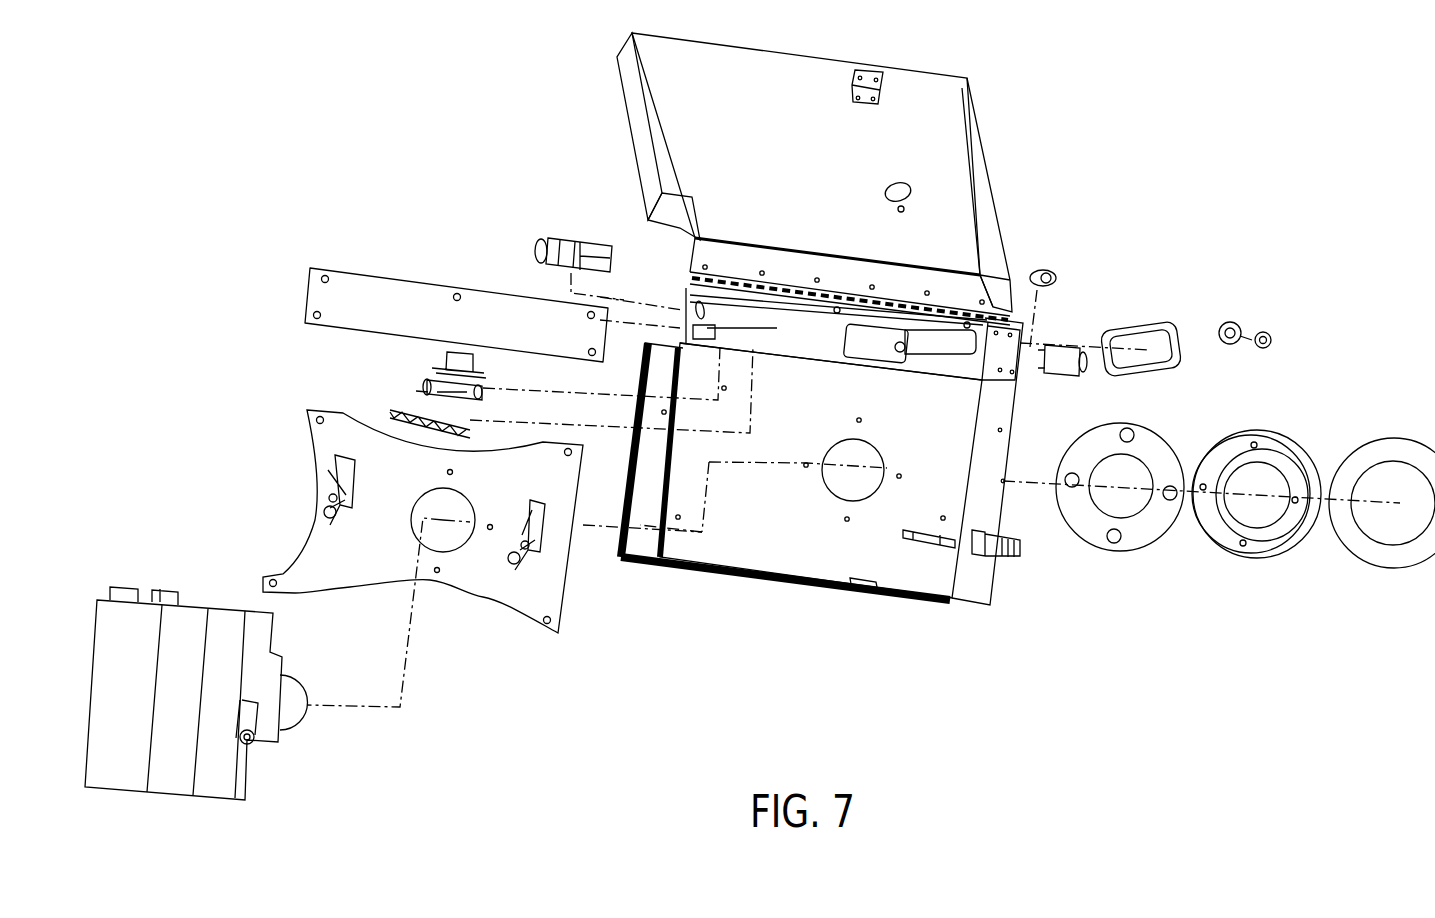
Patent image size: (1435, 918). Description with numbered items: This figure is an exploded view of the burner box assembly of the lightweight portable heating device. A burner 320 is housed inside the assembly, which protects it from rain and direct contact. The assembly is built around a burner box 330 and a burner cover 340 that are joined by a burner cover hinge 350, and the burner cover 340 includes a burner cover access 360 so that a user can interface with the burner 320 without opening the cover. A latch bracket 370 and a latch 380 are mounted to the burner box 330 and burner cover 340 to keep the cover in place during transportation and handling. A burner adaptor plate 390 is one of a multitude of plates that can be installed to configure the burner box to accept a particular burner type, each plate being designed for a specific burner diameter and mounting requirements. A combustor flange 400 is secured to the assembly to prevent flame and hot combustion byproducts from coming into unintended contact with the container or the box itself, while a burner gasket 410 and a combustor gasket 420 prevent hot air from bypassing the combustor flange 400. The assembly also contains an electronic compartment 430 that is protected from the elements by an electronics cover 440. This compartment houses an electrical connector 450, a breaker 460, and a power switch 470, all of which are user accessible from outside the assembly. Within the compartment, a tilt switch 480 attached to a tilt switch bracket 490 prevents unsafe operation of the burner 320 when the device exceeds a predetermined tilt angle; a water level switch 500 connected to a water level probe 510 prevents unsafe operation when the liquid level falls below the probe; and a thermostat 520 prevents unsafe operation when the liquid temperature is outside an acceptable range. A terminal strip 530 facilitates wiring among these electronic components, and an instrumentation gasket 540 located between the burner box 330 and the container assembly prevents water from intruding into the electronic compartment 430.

The burner 320 is at (287, 705).
The burner box 330 is at (978, 590).
The burner cover 340 is at (975, 167).
The burner cover hinge 350 is at (692, 274).
The burner cover access 360 is at (897, 192).
The latch bracket 370 is at (878, 70).
The latch 380 is at (868, 590).
The burner adaptor plate 390 is at (476, 585).
The combustor flange 400 is at (1270, 558).
The burner gasket 410 is at (1130, 552).
The combustor gasket 420 is at (1372, 566).
The electronic compartment 430 is at (810, 435).
The electronics cover 440 is at (517, 305).
The electrical connector 450 is at (1043, 276).
The breaker 460 is at (1068, 346).
The power switch 470 is at (566, 236).
The tilt switch 480 is at (447, 358).
The tilt switch bracket 490 is at (428, 386).
The water level switch 500 is at (860, 345).
The water level probe 510 is at (1268, 333).
The thermostat 520 is at (1232, 330).
The terminal strip 530 is at (396, 413).
The instrumentation gasket 540 is at (1130, 327).